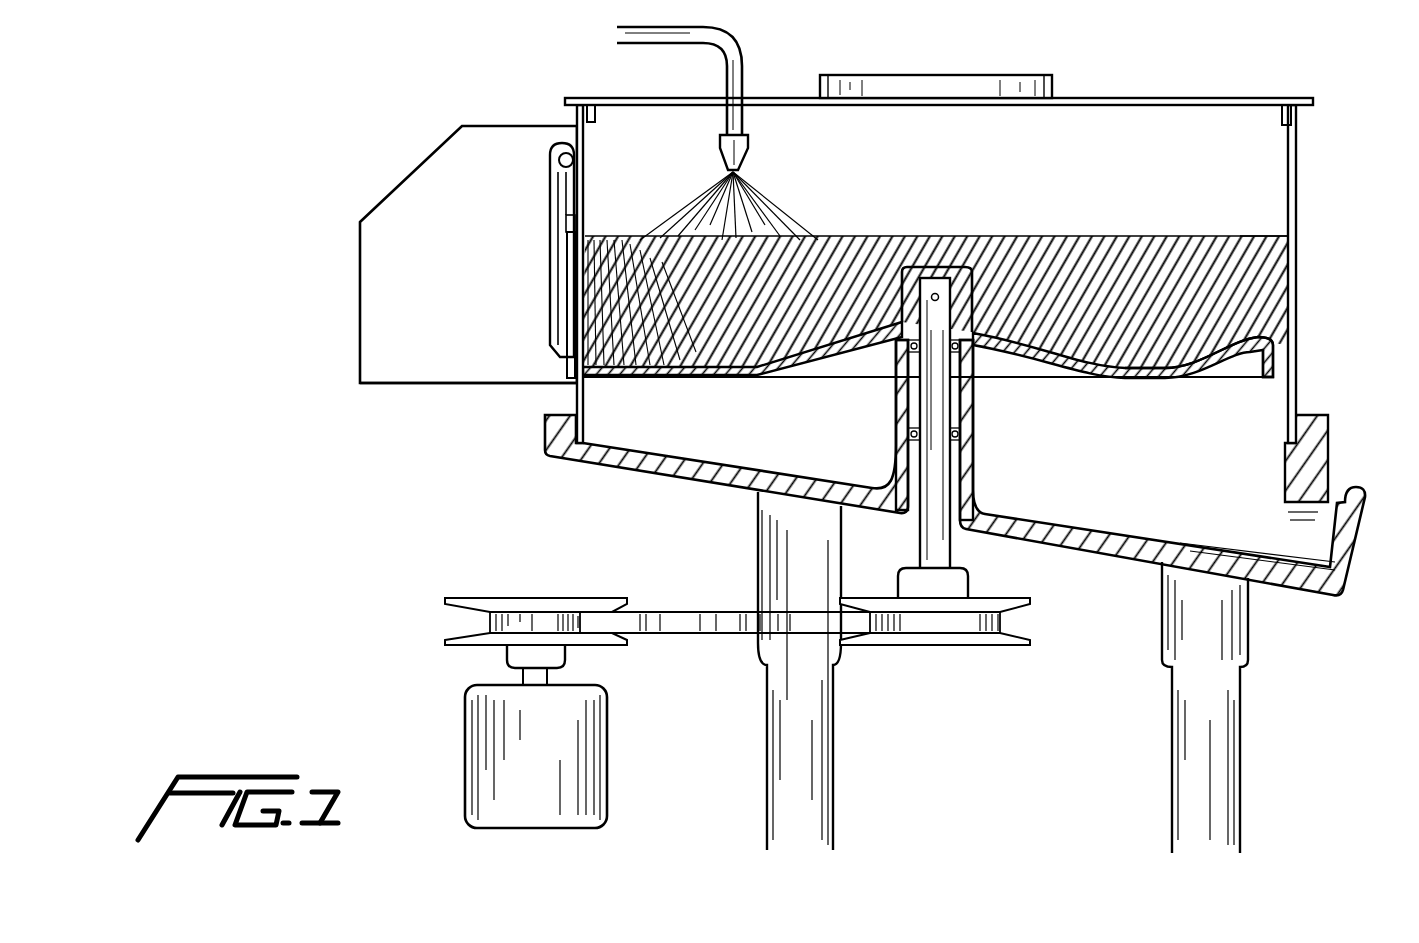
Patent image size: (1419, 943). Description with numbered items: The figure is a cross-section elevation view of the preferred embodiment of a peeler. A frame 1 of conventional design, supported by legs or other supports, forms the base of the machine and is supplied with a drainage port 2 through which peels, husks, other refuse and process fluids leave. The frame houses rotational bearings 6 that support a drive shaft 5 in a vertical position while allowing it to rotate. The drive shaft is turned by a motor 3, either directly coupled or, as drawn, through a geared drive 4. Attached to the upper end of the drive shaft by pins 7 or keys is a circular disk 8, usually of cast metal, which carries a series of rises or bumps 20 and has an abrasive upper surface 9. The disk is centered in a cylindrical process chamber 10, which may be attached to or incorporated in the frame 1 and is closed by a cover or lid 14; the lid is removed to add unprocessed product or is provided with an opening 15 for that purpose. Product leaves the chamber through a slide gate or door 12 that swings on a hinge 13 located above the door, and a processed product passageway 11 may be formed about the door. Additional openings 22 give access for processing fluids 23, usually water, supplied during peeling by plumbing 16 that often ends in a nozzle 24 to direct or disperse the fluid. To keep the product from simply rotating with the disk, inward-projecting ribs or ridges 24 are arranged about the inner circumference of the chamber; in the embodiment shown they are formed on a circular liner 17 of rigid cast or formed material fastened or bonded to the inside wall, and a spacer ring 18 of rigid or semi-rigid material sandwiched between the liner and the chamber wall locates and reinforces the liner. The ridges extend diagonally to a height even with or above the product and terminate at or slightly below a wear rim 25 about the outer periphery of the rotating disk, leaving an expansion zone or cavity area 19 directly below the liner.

The frame 1 is at (1250, 668).
The drainage port 2 is at (1357, 553).
The motor 3 is at (492, 757).
The geared drive 4 is at (728, 612).
The drive shaft 5 is at (955, 490).
The rotational bearings 6 is at (897, 380).
The pins 7 is at (958, 266).
The circular disk 8 is at (862, 333).
The abrasive upper surface 9 is at (645, 365).
The cylindrical process chamber 10 is at (1297, 173).
The processed product passageway 11 is at (405, 387).
The slide gate or door 12 is at (550, 255).
The hinge 13 is at (565, 153).
The cover or lid 14 is at (1160, 100).
The opening 15 is at (977, 72).
The plumbing 16 is at (733, 40).
The circular liner 17 is at (1250, 240).
The spacer ring 18 is at (1290, 290).
The expansion zone or cavity area 19 is at (1283, 375).
The rises or bumps 20 is at (1237, 350).
The additional openings 22 is at (859, 14).
The processing fluids 23 is at (748, 152).
The nozzle / ribs or ridges 24 is at (1088, 272).
The wear rim 25 is at (575, 373).